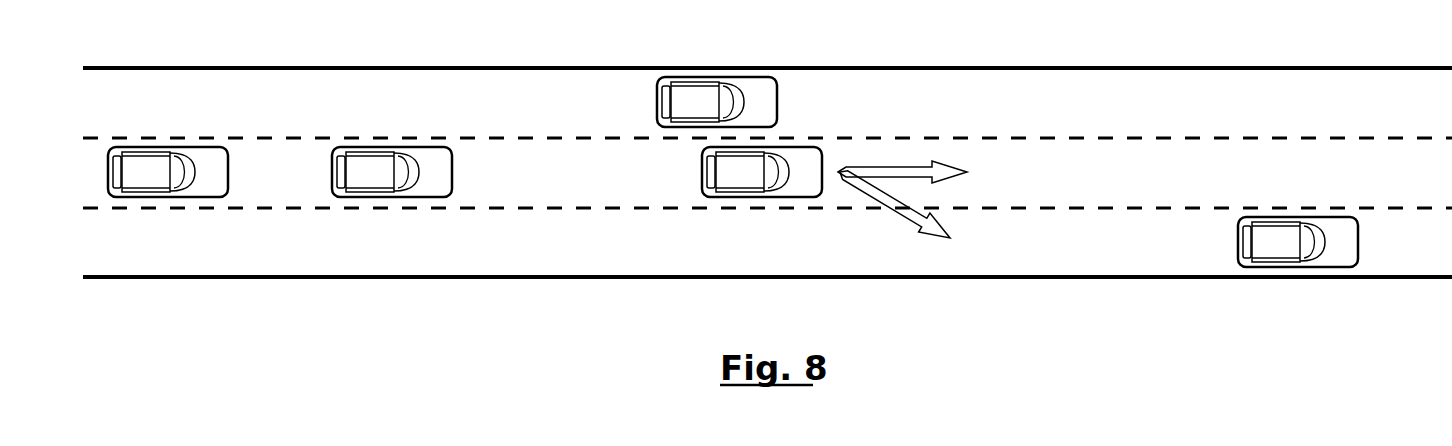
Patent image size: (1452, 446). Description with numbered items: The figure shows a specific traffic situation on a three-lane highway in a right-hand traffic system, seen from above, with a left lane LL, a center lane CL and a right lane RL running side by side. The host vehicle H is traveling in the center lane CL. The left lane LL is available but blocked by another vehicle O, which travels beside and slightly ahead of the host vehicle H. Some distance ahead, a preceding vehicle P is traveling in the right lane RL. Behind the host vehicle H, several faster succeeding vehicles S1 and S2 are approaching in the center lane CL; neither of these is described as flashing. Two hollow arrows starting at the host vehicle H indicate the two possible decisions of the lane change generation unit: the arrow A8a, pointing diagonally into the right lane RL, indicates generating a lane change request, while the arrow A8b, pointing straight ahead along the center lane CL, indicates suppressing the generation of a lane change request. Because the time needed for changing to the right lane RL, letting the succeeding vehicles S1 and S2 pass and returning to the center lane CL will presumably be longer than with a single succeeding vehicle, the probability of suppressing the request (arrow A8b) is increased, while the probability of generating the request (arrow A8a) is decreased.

The succeeding vehicle S2 is at (168, 172).
The succeeding vehicle S1 is at (392, 172).
The other vehicle O is at (717, 102).
The host vehicle H is at (762, 172).
The preceding vehicle P is at (1298, 242).
The arrow A8a is at (938, 213).
The arrow A8b is at (937, 173).
The left lane LL is at (1425, 108).
The center lane CL is at (1426, 174).
The right lane RL is at (1427, 241).